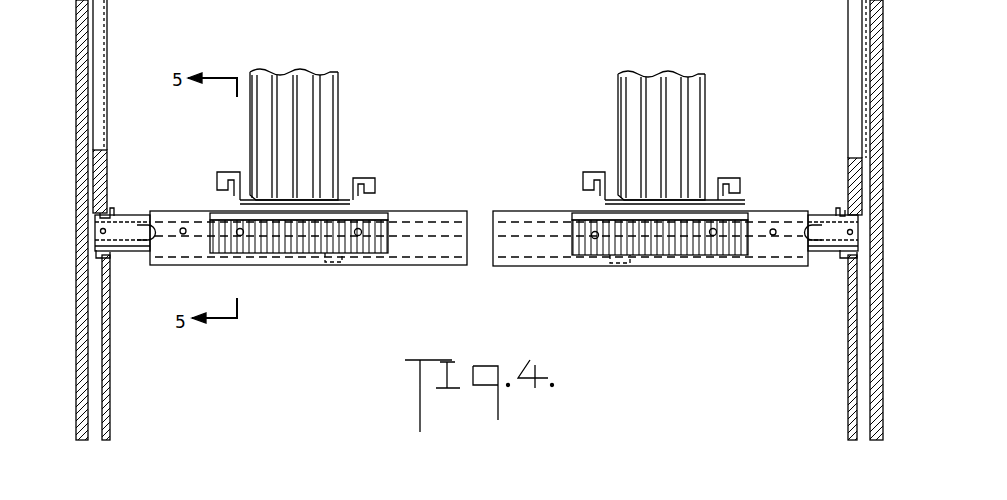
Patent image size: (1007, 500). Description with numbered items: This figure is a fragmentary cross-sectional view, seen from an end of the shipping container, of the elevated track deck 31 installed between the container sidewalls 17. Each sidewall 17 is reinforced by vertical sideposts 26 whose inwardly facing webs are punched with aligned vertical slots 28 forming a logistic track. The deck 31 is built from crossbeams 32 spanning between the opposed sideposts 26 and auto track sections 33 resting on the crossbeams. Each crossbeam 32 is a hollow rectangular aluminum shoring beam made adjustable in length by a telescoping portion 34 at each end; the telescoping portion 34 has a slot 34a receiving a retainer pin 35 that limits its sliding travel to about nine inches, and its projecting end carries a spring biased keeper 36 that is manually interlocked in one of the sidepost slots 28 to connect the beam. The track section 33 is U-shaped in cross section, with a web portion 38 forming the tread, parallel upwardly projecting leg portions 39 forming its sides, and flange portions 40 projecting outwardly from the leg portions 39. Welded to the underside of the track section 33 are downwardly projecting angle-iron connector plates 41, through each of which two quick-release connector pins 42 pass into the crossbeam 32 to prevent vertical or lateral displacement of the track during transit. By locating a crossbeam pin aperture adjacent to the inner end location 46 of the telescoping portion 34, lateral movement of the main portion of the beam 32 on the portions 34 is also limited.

The sidewall 17 is at (76, 118).
The sidepost 26 is at (110, 290).
The vertical slot 28 is at (96, 212).
The track deck 31 is at (532, 250).
The crossbeam 32 is at (510, 258).
The auto track section 33 is at (224, 170).
The telescoping portion 34 is at (120, 218).
The slot 34a is at (142, 222).
The retainer pin 35 is at (182, 228).
The spring biased keeper 36 is at (98, 254).
The web portion 38 is at (342, 195).
The leg portion 39 is at (362, 200).
The flange portion 40 is at (362, 178).
The connector plate 41 is at (313, 228).
The connector pin 42 is at (360, 236).
The inner end location 46 is at (333, 266).